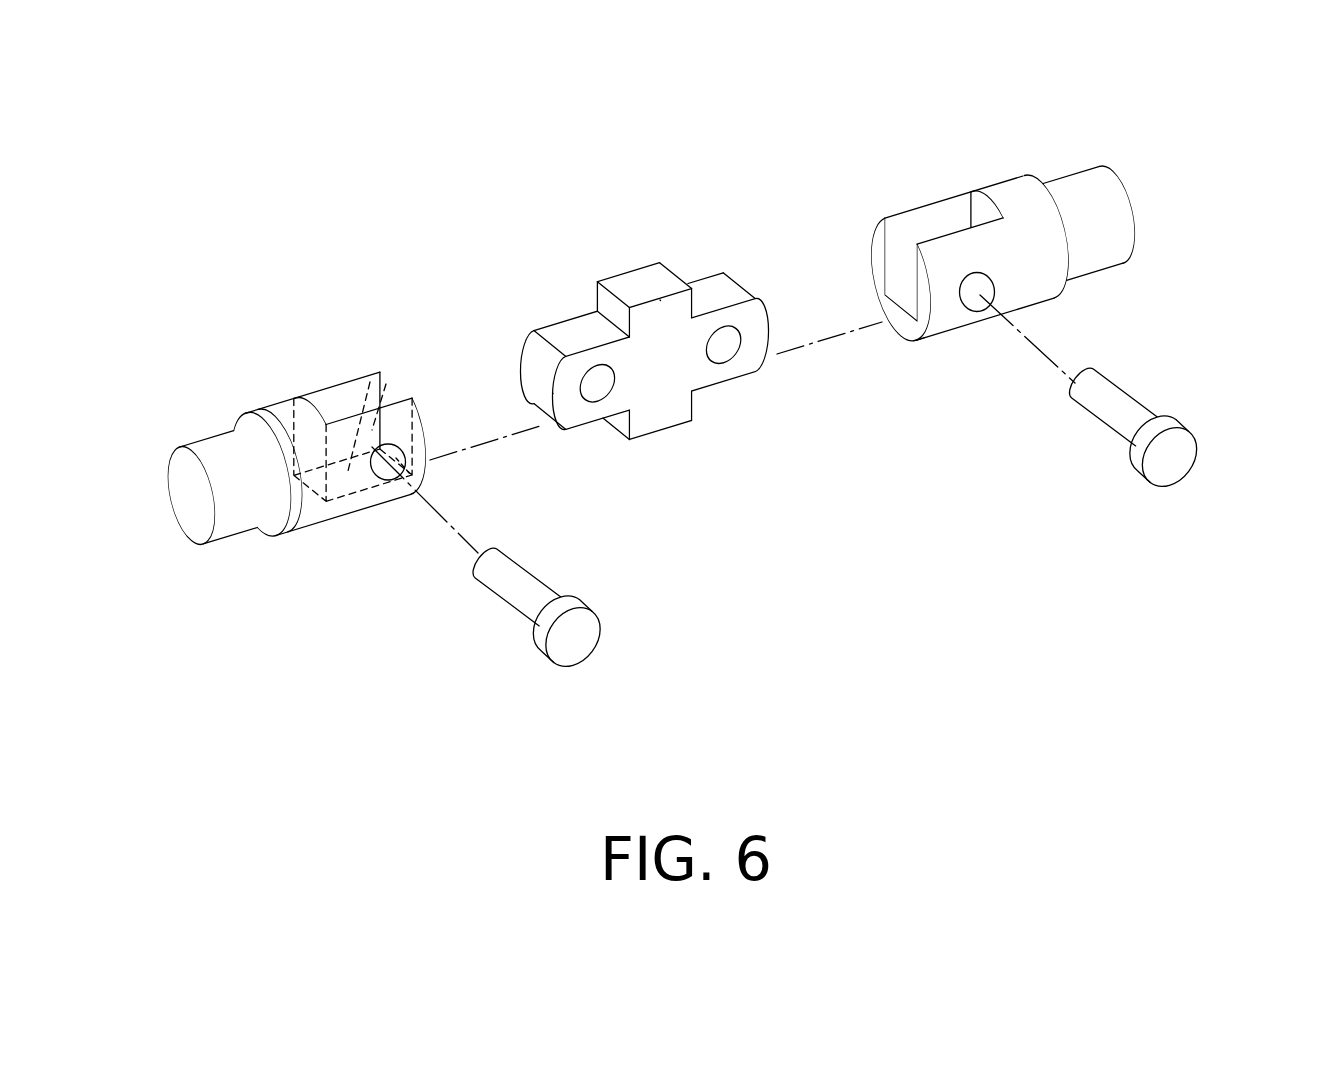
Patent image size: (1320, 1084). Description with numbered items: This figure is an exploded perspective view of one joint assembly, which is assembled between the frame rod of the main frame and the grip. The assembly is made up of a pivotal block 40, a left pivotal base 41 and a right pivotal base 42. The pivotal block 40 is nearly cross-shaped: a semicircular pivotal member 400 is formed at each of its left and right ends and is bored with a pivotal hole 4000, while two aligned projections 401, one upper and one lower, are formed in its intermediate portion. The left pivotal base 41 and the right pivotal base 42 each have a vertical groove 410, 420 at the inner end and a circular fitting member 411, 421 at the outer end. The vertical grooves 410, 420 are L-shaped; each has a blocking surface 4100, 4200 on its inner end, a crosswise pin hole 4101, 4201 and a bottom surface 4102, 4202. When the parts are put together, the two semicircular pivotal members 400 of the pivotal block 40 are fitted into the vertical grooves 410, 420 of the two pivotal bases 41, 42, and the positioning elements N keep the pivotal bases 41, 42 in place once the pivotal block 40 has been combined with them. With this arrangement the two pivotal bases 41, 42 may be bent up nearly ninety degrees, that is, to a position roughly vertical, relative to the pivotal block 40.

The pivotal block 40 is at (670, 456).
The semicircular pivotal member 400 is at (540, 378).
The projection 401 is at (663, 322).
The pivotal hole 4000 is at (723, 350).
The left pivotal base 41 is at (307, 556).
The vertical groove 410 is at (330, 410).
The circular fitting member 411 is at (226, 470).
The blocking surface 4100 is at (415, 497).
The crosswise pin hole 4101 is at (385, 465).
The bottom surface 4102 is at (385, 393).
The right pivotal base 42 is at (1005, 357).
The vertical groove 420 is at (950, 215).
The circular fitting member 421 is at (1095, 212).
The blocking surface 4200 is at (923, 337).
The crosswise pin hole 4201 is at (990, 306).
The bottom surface 4202 is at (907, 303).
The positioning element N is at (503, 603).